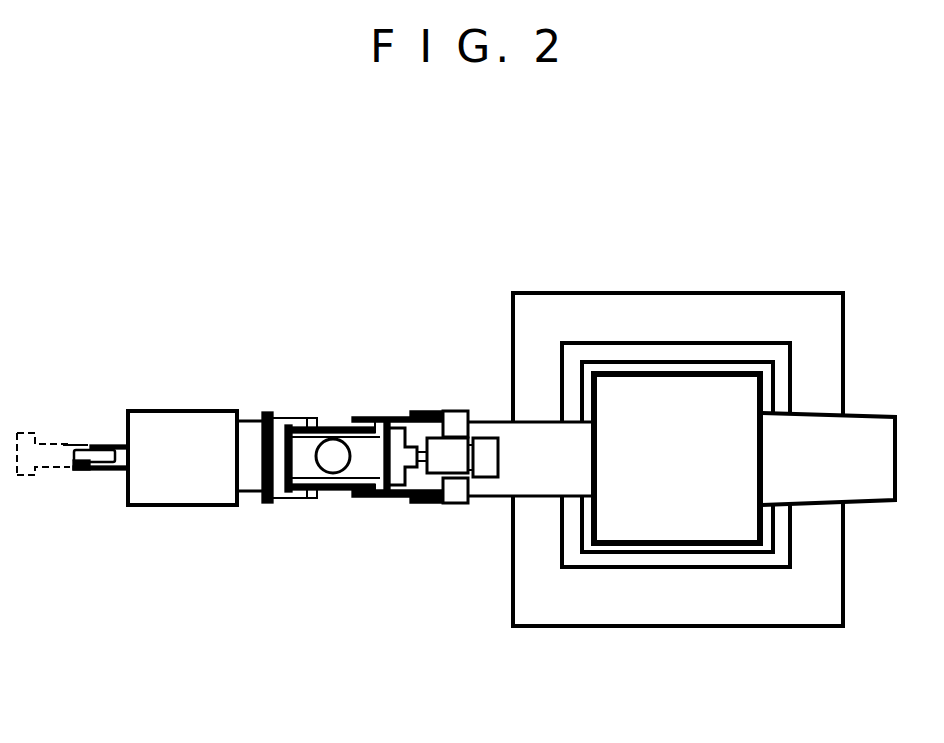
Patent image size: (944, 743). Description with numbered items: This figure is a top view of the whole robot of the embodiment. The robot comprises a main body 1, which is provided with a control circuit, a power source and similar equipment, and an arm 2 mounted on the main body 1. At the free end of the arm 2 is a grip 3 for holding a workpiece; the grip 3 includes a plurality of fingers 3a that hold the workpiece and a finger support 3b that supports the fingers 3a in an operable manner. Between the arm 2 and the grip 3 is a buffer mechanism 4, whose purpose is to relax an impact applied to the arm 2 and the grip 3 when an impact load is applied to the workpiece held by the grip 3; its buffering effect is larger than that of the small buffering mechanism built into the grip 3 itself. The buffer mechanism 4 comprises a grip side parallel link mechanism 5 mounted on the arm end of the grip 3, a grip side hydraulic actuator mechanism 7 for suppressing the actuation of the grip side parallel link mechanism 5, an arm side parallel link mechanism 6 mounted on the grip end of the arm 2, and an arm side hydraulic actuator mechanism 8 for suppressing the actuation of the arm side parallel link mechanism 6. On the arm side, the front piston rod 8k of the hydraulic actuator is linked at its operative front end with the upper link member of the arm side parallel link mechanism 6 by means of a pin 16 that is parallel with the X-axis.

The main body 1 is at (688, 522).
The arm 2 is at (536, 420).
The grip 3 is at (127, 519).
The fingers 3a is at (92, 473).
The finger support 3b is at (182, 494).
The buffer mechanism 4 is at (368, 507).
The grip side parallel link mechanism 5 is at (302, 420).
The arm side parallel link mechanism 6 is at (381, 420).
The grip side hydraulic actuator mechanism 7 is at (333, 450).
The arm side hydraulic actuator mechanism 8 is at (487, 453).
The front piston rod 8k is at (422, 452).
The pin 16 is at (395, 426).